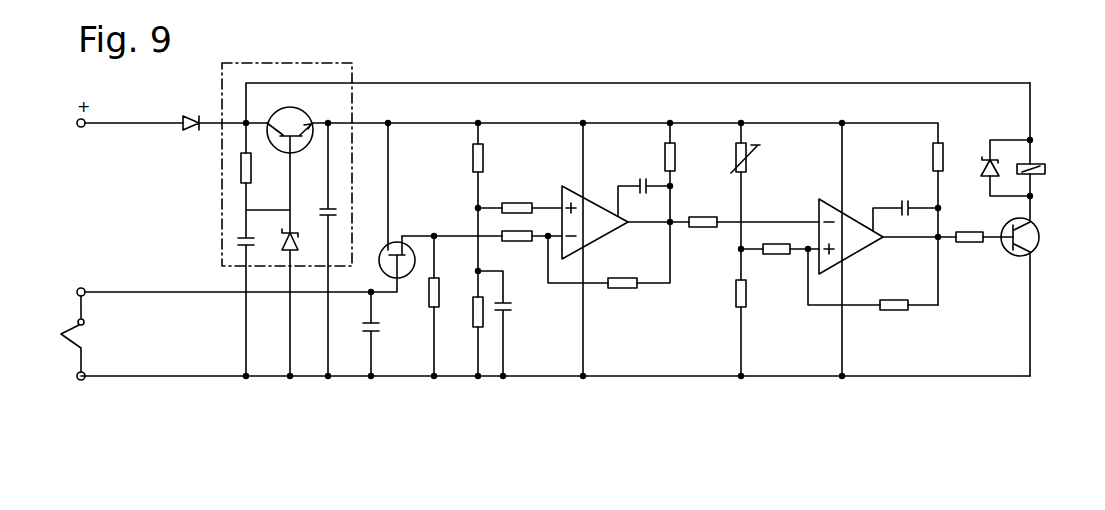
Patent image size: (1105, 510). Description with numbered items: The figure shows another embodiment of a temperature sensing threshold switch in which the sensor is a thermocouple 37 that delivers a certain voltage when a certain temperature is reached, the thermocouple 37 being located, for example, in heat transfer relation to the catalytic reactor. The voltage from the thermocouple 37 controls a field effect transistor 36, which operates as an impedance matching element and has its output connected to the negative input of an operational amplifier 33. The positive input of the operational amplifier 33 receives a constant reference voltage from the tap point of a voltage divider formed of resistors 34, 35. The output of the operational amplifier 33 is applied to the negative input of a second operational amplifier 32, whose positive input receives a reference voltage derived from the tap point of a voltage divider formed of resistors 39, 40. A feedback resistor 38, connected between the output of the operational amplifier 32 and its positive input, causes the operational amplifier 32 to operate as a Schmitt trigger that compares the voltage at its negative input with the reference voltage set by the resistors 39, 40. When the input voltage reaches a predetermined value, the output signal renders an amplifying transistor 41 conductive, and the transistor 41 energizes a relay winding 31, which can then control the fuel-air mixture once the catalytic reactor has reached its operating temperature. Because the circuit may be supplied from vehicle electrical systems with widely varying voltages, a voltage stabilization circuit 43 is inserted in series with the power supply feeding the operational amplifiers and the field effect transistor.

The relay winding 31 is at (1047, 170).
The operational amplifier 32 is at (858, 225).
The operational amplifier 33 is at (597, 210).
The resistor 34 is at (483, 156).
The resistor 35 is at (474, 302).
The field effect transistor 36 is at (383, 247).
The thermocouple 37 is at (82, 334).
The feedback resistor 38 is at (889, 309).
The resistor 39 is at (747, 160).
The resistor 40 is at (746, 290).
The amplifying transistor 41 is at (1039, 243).
The voltage stabilization circuit 43 is at (305, 63).